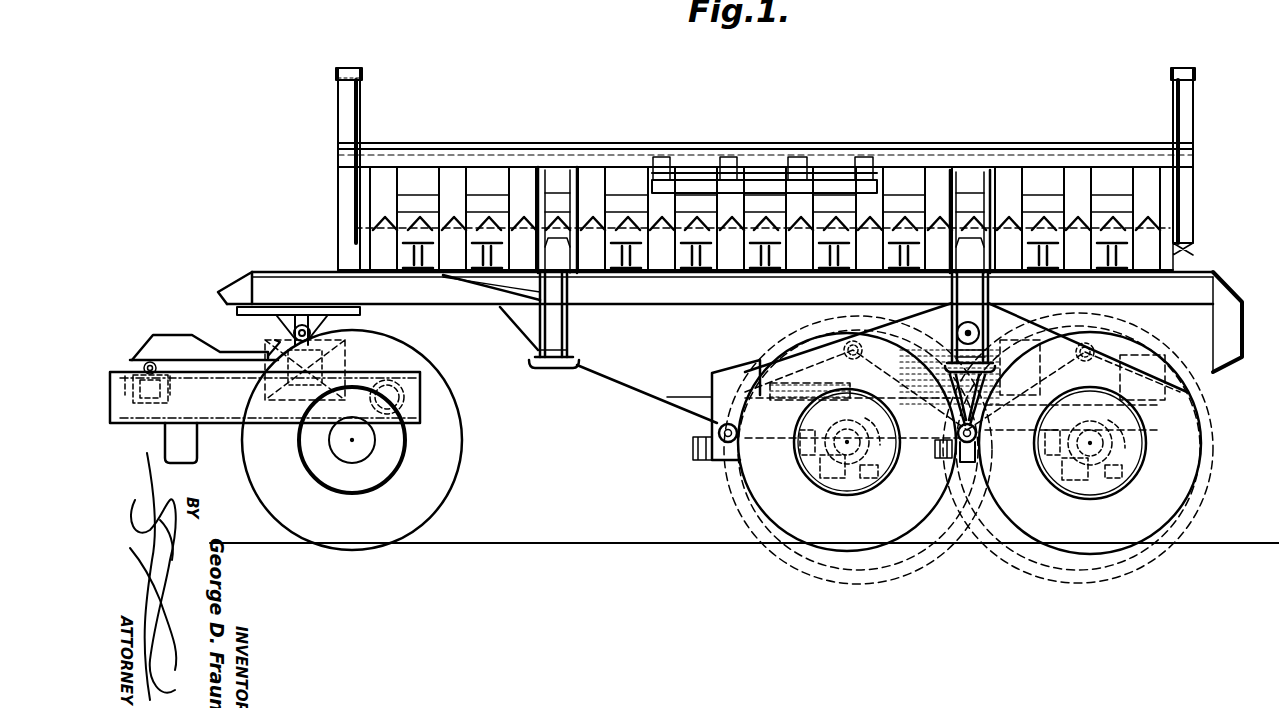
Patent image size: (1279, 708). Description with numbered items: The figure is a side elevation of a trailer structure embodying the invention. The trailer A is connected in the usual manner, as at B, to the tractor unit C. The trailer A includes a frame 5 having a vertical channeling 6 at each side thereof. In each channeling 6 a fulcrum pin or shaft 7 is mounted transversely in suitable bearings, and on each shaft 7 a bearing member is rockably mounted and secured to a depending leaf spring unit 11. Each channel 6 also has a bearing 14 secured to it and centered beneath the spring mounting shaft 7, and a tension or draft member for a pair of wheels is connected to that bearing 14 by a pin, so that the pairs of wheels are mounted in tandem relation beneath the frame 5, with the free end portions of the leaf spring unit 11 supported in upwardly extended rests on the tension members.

The frame 5 is at (1178, 290).
The vertical channeling 6 is at (1052, 323).
The fulcrum pin or shaft 7 is at (1003, 306).
The leaf spring unit 11 is at (1150, 344).
The bearing 14 is at (968, 458).
The trailer A is at (645, 397).
The connection B is at (303, 322).
The tractor unit C is at (450, 496).